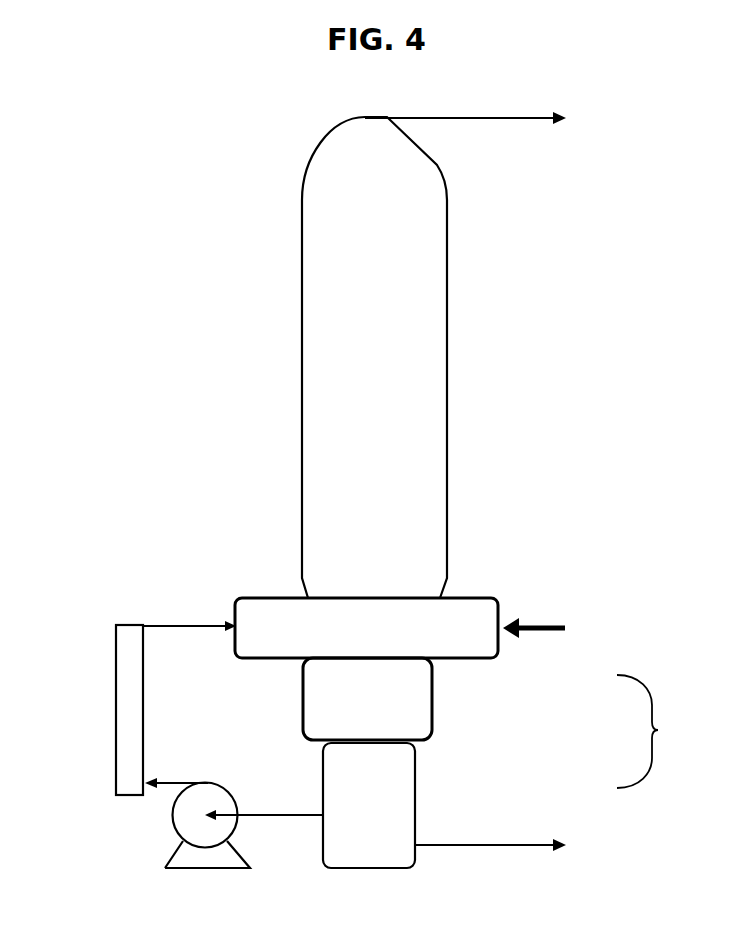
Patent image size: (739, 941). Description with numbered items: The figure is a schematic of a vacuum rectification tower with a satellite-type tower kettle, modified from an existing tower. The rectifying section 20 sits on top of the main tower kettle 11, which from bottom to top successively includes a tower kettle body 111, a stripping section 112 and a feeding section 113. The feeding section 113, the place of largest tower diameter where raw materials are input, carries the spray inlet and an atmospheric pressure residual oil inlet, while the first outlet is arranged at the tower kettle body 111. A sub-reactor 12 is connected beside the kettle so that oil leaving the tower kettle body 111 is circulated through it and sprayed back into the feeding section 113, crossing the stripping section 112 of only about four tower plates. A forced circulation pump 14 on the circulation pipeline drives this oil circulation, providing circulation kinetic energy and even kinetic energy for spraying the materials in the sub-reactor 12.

The rectifying section 20 is at (445, 378).
The main tower kettle 11 is at (659, 731).
The tower kettle body 111 is at (415, 832).
The stripping section 112 is at (432, 712).
The feeding section 113 is at (607, 693).
The sub-reactor 12 is at (116, 700).
The forced circulation pump 14 is at (175, 830).